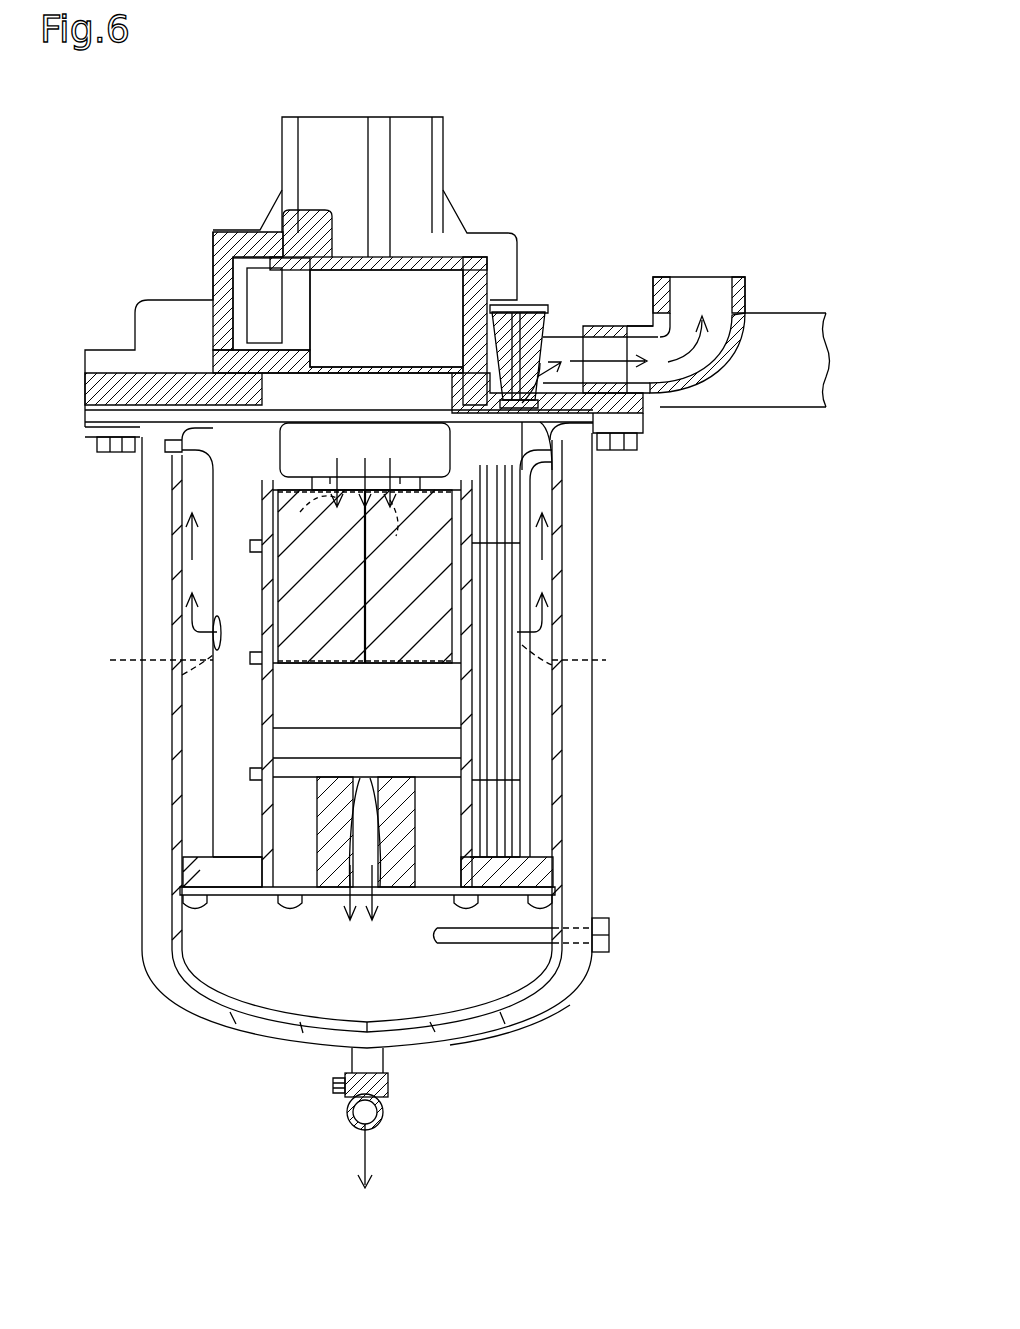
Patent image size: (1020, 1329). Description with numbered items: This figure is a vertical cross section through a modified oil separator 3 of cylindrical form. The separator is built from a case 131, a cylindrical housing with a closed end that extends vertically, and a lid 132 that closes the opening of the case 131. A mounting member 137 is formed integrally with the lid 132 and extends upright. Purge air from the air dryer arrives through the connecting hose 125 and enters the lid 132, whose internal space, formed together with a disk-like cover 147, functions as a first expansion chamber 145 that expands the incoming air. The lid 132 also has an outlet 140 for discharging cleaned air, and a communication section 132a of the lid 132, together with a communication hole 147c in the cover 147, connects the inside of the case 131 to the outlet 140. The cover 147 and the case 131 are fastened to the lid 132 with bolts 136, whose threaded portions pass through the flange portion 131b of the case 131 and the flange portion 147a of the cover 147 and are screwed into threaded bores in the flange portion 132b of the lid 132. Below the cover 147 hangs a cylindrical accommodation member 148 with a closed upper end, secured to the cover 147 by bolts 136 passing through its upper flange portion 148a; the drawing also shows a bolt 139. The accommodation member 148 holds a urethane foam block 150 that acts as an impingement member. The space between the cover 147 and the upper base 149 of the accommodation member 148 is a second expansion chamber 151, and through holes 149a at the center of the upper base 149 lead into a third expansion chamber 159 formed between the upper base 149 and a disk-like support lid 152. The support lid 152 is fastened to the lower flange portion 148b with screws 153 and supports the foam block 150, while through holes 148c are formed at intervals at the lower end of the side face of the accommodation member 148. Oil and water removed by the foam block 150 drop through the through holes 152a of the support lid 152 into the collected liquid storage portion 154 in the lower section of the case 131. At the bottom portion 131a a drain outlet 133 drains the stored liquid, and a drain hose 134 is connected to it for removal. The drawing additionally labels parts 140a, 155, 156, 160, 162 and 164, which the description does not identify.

The oil separator 3 is at (819, 111).
The mounting member 137 is at (455, 203).
The lid 132 is at (180, 300).
The communication section 132a is at (463, 358).
The flange portion 132b is at (85, 395).
The first expansion chamber 145 is at (443, 407).
The cover 147 is at (288, 414).
The flange portion 147a is at (85, 417).
The communication hole 147c is at (540, 462).
The case 131 is at (594, 866).
The bottom portion 131a is at (495, 1032).
The flange portion 131b is at (82, 430).
The bolt 136 is at (112, 455).
The accommodation member 148 is at (212, 578).
The flange portion 148a is at (170, 476).
The flange portion 148b is at (187, 868).
The through hole 148c is at (367, 646).
The bolt 139 is at (185, 502).
The urethane foam block 150 is at (275, 611).
The upper base 149 is at (357, 464).
The second expansion chamber 151 is at (422, 447).
The through hole 149a is at (354, 530).
The third expansion chamber 159 is at (345, 611).
The support lid 152 is at (250, 897).
The through hole 152a is at (370, 875).
The screw 153 is at (197, 908).
The collected liquid storage portion 154 is at (418, 1005).
The drain tube 155 is at (473, 945).
The drain fitting 156 is at (606, 926).
The drain outlet 133 is at (386, 1062).
The drain hose 134 is at (385, 1116).
The outlet 140 is at (620, 326).
The valve 140a is at (560, 338).
The connection port 164 is at (676, 277).
The elbow wall 162 is at (740, 330).
The elbow 160 is at (722, 364).
The connecting hose 125 is at (818, 312).